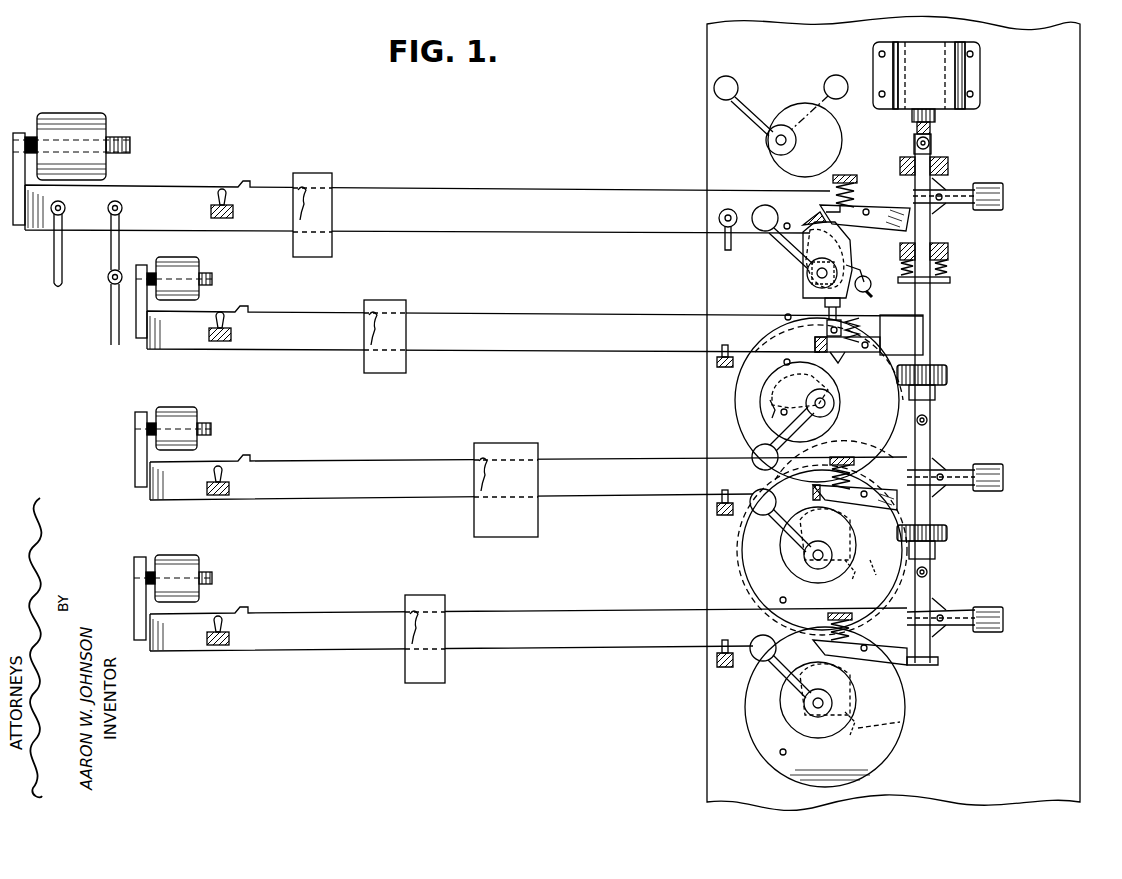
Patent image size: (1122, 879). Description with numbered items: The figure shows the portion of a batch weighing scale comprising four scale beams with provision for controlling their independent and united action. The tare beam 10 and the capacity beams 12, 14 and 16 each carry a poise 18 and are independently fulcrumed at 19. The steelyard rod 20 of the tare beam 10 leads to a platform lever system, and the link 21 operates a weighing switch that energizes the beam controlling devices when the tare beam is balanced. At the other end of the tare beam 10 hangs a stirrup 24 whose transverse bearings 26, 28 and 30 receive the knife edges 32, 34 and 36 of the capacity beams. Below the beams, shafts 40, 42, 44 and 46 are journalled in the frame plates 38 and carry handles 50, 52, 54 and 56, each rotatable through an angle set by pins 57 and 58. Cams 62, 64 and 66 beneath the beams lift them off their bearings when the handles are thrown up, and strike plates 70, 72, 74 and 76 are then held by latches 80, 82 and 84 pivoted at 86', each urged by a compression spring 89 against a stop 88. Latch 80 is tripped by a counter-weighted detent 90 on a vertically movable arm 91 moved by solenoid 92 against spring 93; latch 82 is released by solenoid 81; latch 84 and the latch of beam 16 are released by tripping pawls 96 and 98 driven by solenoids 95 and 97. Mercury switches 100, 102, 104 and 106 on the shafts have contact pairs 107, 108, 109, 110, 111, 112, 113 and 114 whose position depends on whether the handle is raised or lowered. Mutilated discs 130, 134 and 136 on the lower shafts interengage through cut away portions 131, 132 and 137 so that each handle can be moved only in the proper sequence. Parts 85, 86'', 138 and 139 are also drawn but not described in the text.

The tare beam 10 is at (571, 200).
The capacity beam 12 is at (605, 322).
The capacity beam 14 is at (575, 468).
The capacity beam 16 is at (568, 622).
The poise 18 is at (303, 252).
The fulcrum 19 is at (224, 218).
The steelyard rod 20 is at (119, 250).
The link 21 is at (62, 250).
The stirrup 24 is at (723, 233).
The bearing 26 is at (715, 360).
The bearing 28 is at (716, 509).
The bearing 30 is at (716, 660).
The knife edge 32 is at (736, 330).
The knife edge 34 is at (736, 486).
The knife edge 36 is at (736, 641).
The plate 38 is at (1060, 143).
The shaft 40 is at (816, 275).
The shaft 42 is at (834, 403).
The shaft 44 is at (817, 570).
The shaft 46 is at (818, 718).
The handle 50 is at (796, 252).
The handle 52 is at (776, 441).
The handle 54 is at (775, 525).
The handle 56 is at (782, 675).
The pin 57 is at (787, 222).
The pin 58 is at (788, 313).
The cam 62 is at (759, 392).
The cam 64 is at (790, 555).
The cam 66 is at (790, 700).
The strike plate 70 is at (848, 252).
The strike plate 72 is at (838, 395).
The strike plate 74 is at (846, 523).
The strike plate 76 is at (846, 673).
The latch 80 is at (868, 206).
The solenoid 81 is at (824, 300).
The latch 82 is at (883, 333).
The latch 84 is at (893, 525).
The arm 85 is at (893, 662).
The latch pivot 86' is at (859, 177).
The spring 86'' is at (868, 428).
The stop 88 is at (912, 204).
The compression spring 89 is at (836, 185).
The detent 90 is at (958, 195).
The arm 91 is at (928, 153).
The solenoid 92 is at (945, 72).
The spring 93 is at (940, 278).
The solenoid 95 is at (950, 375).
The tripping pawl 96 is at (966, 474).
The solenoid 97 is at (950, 534).
The tripping pawl 98 is at (956, 614).
The mercury switch 100 is at (862, 274).
The mercury switch 102 is at (812, 365).
The mercury switch 104 is at (853, 580).
The mercury switch 106 is at (858, 740).
The contact pair 107 is at (815, 222).
The contact pair 108 is at (871, 290).
The contact pair 109 is at (758, 422).
The contact pair 110 is at (838, 358).
The contact pair 111 is at (808, 492).
The contact pair 112 is at (876, 576).
The contact pair 113 is at (813, 640).
The contact pair 114 is at (900, 724).
The disc 130 is at (738, 406).
The cut away portion 131 is at (926, 443).
The cut away portion 132 is at (750, 565).
The disc 134 is at (756, 595).
The disc 136 is at (880, 746).
The cut away portion 137 is at (851, 444).
The handle 138 is at (757, 110).
The dial 139 is at (838, 128).